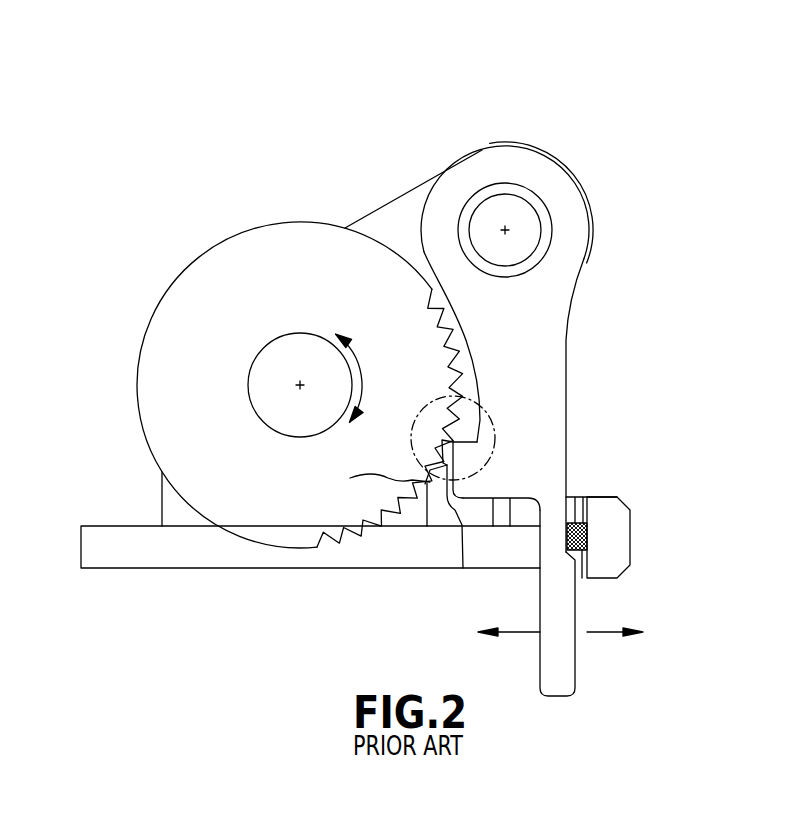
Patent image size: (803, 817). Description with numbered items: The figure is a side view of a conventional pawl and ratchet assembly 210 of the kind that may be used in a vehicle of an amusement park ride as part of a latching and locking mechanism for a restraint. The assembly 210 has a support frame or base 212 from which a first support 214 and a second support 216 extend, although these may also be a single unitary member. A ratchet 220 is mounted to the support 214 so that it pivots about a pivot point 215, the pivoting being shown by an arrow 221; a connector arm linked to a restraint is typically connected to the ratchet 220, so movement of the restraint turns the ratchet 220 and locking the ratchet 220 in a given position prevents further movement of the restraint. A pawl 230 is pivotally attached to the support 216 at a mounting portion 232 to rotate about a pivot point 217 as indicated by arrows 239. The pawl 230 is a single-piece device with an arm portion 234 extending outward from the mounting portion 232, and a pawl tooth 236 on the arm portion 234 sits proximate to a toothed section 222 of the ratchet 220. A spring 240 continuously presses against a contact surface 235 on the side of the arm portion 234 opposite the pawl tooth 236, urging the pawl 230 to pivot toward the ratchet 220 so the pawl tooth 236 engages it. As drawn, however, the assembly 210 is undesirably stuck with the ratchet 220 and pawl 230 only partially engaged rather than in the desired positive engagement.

The pawl and ratchet assembly 210 is at (578, 107).
The base 212 is at (100, 526).
The support 214 is at (162, 490).
The pivot point 215 is at (300, 385).
The support 216 is at (370, 213).
The pivot point 217 is at (505, 230).
The ratchet 220 is at (224, 218).
The arrow 221 is at (362, 366).
The toothed section 222 is at (422, 427).
The pawl 230 is at (581, 368).
The mounting portion 232 is at (573, 218).
The arm portion 234 is at (596, 669).
The contact surface 235 is at (568, 512).
The pawl tooth 236 is at (463, 570).
The arrows 239 is at (607, 632).
The spring 240 is at (588, 542).